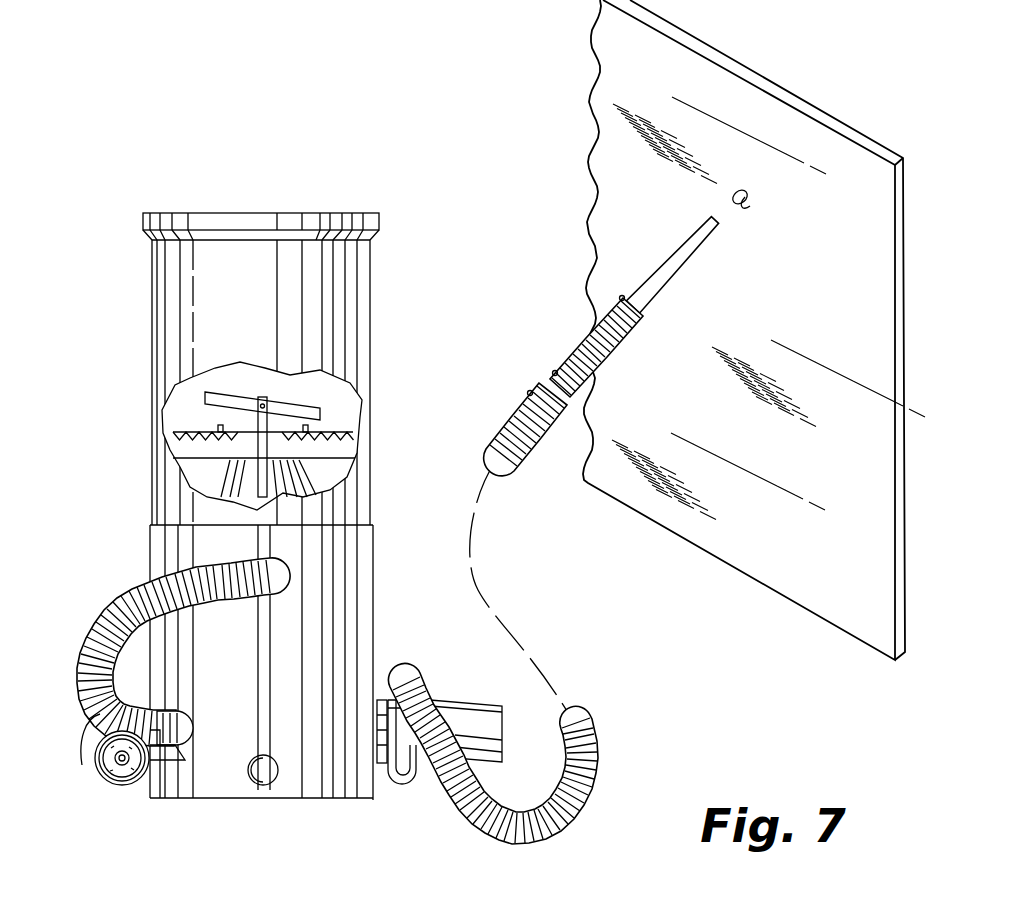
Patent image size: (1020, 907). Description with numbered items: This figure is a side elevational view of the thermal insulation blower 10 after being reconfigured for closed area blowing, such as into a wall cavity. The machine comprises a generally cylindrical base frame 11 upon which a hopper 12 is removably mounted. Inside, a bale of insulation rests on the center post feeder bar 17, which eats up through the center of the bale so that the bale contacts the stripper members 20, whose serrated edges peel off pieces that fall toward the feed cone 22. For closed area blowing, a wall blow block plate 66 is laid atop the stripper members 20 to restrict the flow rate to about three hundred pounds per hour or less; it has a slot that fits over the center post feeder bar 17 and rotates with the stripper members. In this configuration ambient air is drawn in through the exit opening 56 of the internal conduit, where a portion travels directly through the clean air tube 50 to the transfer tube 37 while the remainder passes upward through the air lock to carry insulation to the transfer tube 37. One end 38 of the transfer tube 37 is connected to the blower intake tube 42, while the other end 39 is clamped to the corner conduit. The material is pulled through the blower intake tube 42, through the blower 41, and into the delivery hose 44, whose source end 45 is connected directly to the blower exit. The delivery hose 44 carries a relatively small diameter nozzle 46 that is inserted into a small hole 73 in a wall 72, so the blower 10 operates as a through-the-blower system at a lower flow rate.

The thermal insulation blower 10 is at (382, 537).
The base frame 11 is at (148, 547).
The hopper 12 is at (372, 322).
The center post feeder bar 17 is at (225, 392).
The stripper members 20 is at (192, 467).
The feed cone 22 is at (372, 455).
The transfer tube 37 is at (82, 765).
The first end of transfer tube 38 is at (180, 762).
The other end of transfer tube 39 is at (282, 570).
The blower 41 is at (470, 700).
The blower intake tube 42 is at (197, 740).
The delivery hose 44 is at (600, 752).
The source end of delivery hose 45 is at (400, 672).
The nozzle 46 is at (673, 245).
The clean air tube 50 is at (280, 615).
The exit opening of internal conduit 56 is at (268, 772).
The wall blow block plate 66 is at (372, 397).
The wall 72 is at (823, 594).
The hole 73 is at (745, 197).